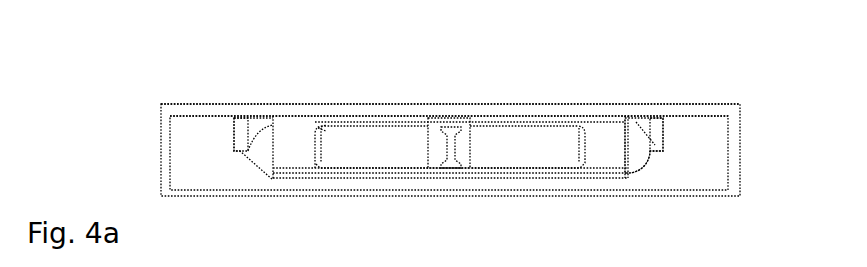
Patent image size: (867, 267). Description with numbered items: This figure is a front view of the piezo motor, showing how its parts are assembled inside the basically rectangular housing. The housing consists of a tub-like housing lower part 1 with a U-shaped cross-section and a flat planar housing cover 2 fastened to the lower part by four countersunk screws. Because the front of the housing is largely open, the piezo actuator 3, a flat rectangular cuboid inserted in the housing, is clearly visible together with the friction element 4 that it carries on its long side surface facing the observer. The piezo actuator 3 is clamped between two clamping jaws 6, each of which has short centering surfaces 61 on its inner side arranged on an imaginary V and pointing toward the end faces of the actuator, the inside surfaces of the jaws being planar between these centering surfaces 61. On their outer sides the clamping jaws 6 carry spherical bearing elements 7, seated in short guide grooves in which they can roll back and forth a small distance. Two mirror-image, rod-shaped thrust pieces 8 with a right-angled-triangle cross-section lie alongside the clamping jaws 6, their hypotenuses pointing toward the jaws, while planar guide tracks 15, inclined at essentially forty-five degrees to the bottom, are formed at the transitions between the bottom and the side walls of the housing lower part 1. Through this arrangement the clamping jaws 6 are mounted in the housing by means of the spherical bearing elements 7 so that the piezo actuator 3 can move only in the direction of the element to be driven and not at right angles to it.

The housing lower part 1 is at (707, 163).
The housing cover 2 is at (712, 108).
The piezo actuator 3 is at (380, 155).
The friction element 4 is at (441, 143).
The clamping jaws 6 is at (297, 152).
The spherical bearing elements 7 is at (267, 142).
The thrust pieces 8 is at (248, 125).
The guide tracks 15 is at (640, 172).
The centering surfaces 61 is at (575, 163).